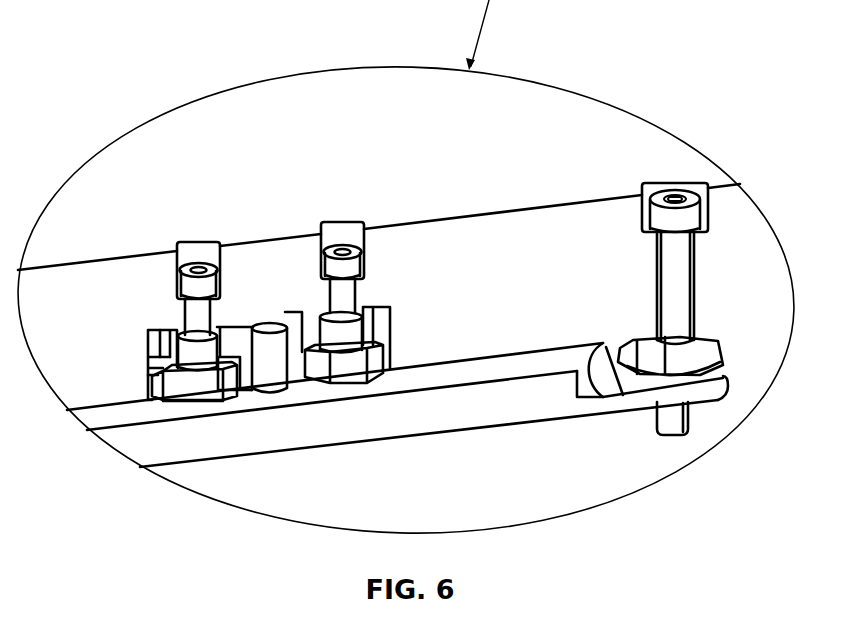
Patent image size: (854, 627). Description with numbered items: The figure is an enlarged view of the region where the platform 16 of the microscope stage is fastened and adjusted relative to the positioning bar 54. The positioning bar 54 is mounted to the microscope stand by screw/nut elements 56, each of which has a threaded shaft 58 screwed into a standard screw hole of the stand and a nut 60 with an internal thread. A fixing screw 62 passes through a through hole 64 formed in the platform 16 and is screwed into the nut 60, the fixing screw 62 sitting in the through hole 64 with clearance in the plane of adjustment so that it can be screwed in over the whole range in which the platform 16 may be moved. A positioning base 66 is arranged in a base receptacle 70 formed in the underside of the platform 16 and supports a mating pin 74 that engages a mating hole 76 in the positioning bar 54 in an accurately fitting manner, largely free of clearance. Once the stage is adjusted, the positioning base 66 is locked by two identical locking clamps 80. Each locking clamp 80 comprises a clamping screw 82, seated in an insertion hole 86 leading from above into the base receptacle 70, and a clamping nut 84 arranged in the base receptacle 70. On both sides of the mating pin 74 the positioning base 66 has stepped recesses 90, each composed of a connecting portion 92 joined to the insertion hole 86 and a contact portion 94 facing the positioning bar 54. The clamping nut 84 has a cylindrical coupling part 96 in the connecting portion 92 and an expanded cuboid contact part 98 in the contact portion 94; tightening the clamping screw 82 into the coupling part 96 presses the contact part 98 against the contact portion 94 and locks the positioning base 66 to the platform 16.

The platform 16 is at (418, 186).
The positioning bar 54 is at (462, 412).
The screw/nut element 56 is at (733, 381).
The threaded shaft 58 is at (669, 423).
The nut 60 is at (706, 342).
The fixing screw 62 is at (656, 219).
The through hole 64 is at (670, 182).
The positioning base 66 is at (306, 328).
The base receptacle 70 is at (151, 395).
The mating pin 74 is at (269, 370).
The mating hole 76 is at (291, 382).
The locking clamp 80 is at (238, 311).
The clamping screw 82 is at (193, 312).
The clamping nut 84 is at (196, 414).
The insertion hole 86 is at (192, 246).
The recess 90 is at (170, 373).
The connecting portion 92 is at (172, 348).
The contact portion 94 is at (243, 372).
The coupling part 96 is at (210, 352).
The contact part 98 is at (206, 388).